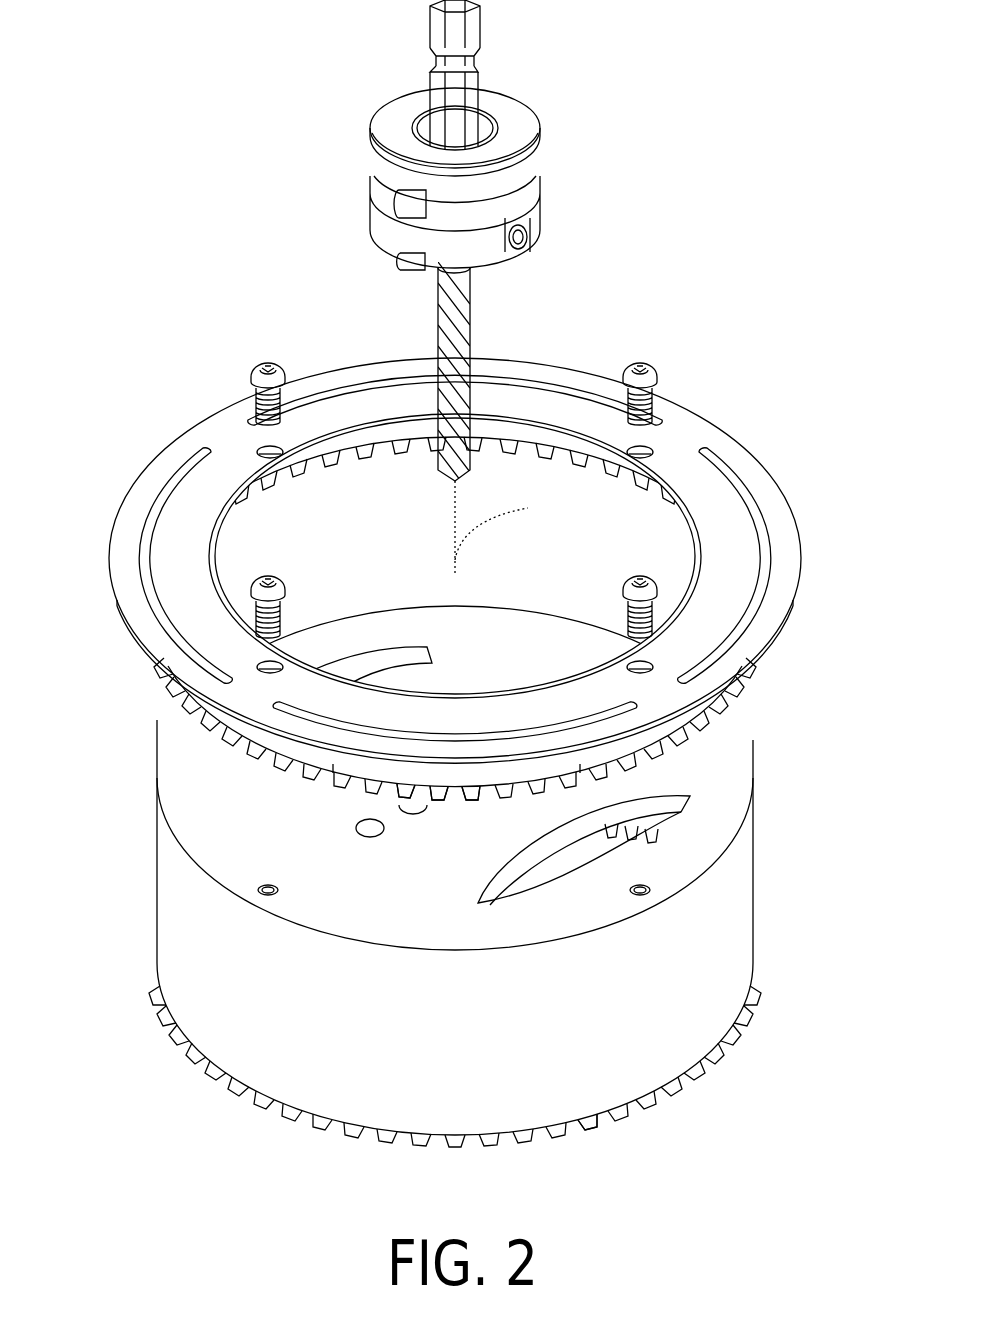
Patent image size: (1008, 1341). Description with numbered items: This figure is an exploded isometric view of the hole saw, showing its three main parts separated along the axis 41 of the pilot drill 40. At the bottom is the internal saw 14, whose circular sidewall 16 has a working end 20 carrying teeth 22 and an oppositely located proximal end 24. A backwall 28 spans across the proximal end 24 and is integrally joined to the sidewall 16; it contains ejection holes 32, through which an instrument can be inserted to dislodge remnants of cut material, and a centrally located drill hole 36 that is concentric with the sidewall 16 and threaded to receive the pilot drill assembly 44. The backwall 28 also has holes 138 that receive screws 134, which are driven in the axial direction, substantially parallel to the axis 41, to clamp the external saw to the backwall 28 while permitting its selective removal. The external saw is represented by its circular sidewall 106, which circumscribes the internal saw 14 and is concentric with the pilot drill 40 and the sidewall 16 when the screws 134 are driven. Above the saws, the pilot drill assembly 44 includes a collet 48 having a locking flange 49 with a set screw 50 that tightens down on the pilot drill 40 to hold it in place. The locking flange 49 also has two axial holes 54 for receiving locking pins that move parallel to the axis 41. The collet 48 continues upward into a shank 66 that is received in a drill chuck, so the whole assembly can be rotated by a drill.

The internal saw 14 is at (471, 923).
The circular sidewall 16 is at (633, 1032).
The working end 20 is at (655, 1145).
The teeth 22 is at (588, 1118).
The proximal end 24 is at (468, 569).
The backwall 28 is at (190, 810).
The ejection holes 32 is at (548, 868).
The drill hole 36 is at (465, 800).
The pilot drill 40 is at (468, 335).
The axis 41 is at (516, 527).
The pilot drill assembly 44 is at (417, 135).
The collet 48 is at (555, 168).
The locking flange 49 is at (528, 215).
The set screw 50 is at (518, 247).
The axial holes 54 is at (398, 205).
The shank 66 is at (432, 30).
The circular sidewall 106 is at (735, 703).
The screws 134 is at (262, 377).
The holes 138 is at (262, 893).